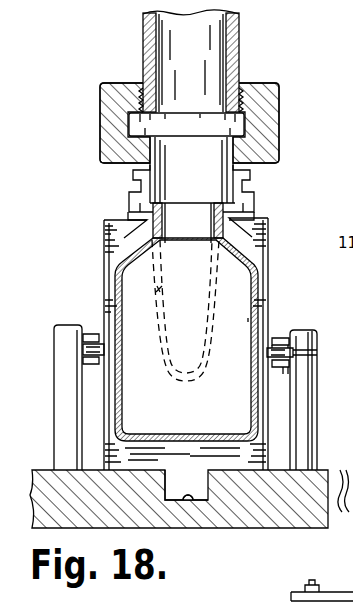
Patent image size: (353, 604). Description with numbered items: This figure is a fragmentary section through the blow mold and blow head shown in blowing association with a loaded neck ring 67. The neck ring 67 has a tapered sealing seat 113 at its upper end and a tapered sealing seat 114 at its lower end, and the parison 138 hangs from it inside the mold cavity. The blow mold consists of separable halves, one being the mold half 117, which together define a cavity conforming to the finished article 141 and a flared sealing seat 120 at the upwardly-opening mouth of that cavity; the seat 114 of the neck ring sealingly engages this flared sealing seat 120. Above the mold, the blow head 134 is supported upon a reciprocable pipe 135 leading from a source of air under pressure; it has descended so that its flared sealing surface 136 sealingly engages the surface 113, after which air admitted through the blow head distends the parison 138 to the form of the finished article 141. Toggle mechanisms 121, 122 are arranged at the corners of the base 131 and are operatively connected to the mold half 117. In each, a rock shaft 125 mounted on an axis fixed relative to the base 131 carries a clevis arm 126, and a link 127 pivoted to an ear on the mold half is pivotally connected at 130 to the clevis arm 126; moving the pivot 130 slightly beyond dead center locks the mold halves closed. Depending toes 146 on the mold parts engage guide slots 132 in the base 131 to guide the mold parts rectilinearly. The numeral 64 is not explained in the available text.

The frame 64 is at (352, 178).
The neck ring 67 is at (251, 204).
The tapered sealing seat 113 is at (254, 148).
The tapered sealing seat 114 is at (106, 233).
The mold half 117 is at (110, 264).
The flared sealing seat 120 is at (262, 218).
The toggle mechanism 121 is at (323, 330).
The toggle mechanism 122 is at (51, 316).
The rock shaft 125 is at (303, 392).
The clevis arm 126 is at (284, 374).
The link 127 is at (284, 336).
The pivot 130 is at (293, 352).
The base 131 is at (46, 480).
The guide slot 132 is at (188, 503).
The blow head 134 is at (274, 84).
The reciprocable pipe 135 is at (239, 35).
The flared sealing surface 136 is at (228, 166).
The parison 138 is at (176, 310).
The finished article 141 is at (251, 314).
The depending toe 146 is at (178, 487).